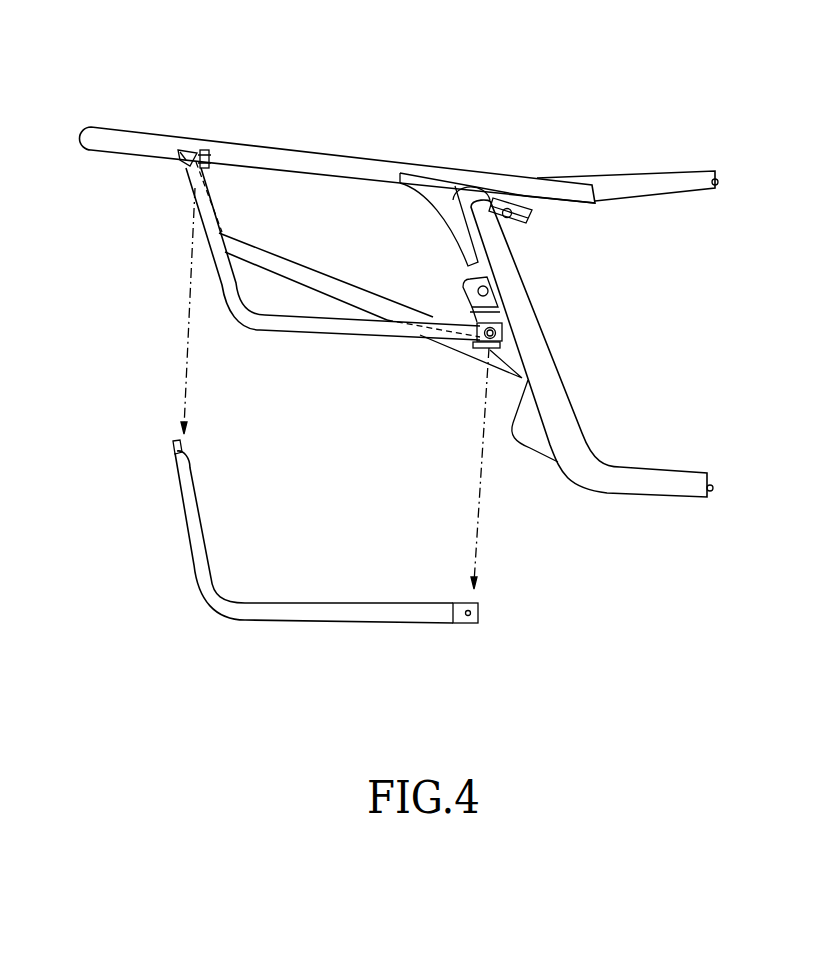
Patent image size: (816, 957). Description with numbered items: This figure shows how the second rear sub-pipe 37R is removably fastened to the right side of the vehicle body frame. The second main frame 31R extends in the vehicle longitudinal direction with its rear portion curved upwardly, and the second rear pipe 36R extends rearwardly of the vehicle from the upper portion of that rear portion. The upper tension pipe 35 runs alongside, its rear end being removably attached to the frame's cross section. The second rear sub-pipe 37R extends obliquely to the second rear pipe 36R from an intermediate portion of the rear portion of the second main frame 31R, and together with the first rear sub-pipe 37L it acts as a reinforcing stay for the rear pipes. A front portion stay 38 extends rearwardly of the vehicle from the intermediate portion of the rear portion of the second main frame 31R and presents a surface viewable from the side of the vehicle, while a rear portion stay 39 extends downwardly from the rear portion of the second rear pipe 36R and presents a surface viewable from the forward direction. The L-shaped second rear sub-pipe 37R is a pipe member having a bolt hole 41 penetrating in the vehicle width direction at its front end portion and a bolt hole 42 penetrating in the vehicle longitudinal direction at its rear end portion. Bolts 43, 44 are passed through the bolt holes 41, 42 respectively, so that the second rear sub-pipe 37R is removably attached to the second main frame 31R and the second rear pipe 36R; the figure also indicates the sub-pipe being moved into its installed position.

The second main frame 31R is at (560, 425).
The upper tension pipe 35 is at (650, 182).
The second rear pipe 36R is at (313, 160).
The first rear sub-pipe 37L is at (327, 285).
The second rear sub-pipe 37R is at (307, 325).
The front portion stay 38 is at (474, 349).
The rear portion stay 39 is at (185, 147).
The bolt hole 41 is at (467, 624).
The bolt hole 42 is at (173, 450).
The bolt 43 is at (502, 328).
The bolt 44 is at (210, 158).